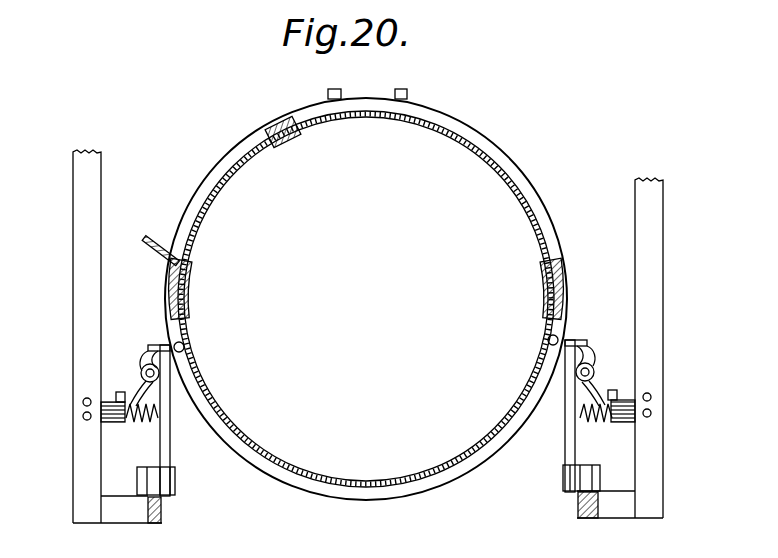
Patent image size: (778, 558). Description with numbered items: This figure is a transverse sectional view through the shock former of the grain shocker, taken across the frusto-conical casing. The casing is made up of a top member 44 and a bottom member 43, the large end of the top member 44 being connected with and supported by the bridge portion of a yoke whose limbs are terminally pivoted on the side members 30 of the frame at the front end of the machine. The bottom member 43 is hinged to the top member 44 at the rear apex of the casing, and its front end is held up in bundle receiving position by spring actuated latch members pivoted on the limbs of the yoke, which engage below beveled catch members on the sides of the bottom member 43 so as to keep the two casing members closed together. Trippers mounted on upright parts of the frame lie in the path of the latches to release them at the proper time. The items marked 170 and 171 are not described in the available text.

The side members 30 is at (160, 526).
The bottom member 43 is at (441, 468).
The top member 44 is at (300, 130).
The member 170 is at (385, 551).
The member 171 is at (347, 549).